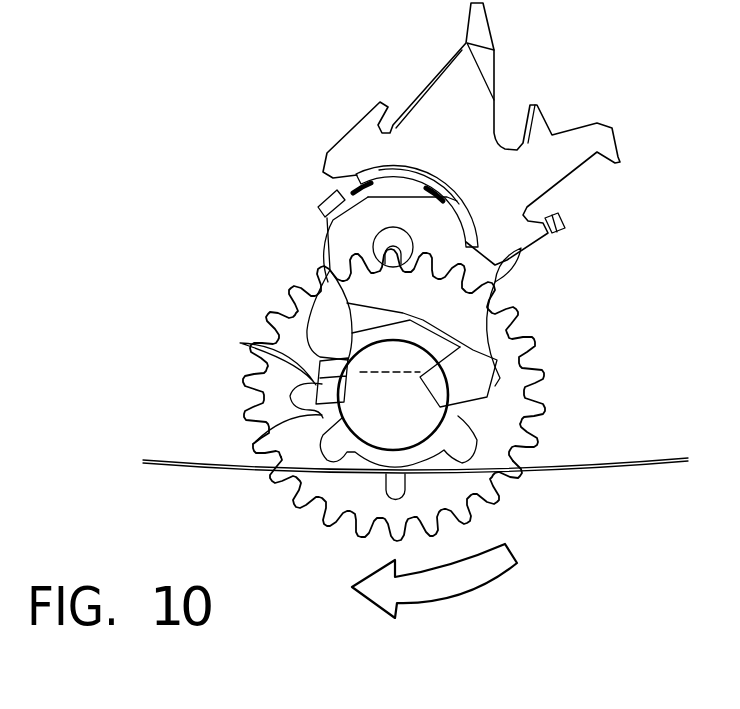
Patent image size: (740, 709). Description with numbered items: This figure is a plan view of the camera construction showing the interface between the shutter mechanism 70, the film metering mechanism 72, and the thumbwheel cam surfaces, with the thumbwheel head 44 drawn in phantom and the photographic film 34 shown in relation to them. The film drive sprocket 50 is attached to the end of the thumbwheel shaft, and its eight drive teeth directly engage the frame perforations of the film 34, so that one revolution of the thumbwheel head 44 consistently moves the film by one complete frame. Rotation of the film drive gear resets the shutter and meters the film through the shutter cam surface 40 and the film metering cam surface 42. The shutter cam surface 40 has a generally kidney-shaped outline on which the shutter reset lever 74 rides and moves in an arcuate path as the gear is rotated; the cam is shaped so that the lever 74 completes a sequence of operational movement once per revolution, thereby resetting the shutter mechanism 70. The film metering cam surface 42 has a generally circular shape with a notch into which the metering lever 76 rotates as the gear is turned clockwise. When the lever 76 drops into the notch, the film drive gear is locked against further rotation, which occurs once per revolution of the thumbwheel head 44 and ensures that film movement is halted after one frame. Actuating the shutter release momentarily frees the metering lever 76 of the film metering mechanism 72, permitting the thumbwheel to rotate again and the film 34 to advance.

The photographic film 34 is at (162, 459).
The shutter cam surface 40 is at (250, 343).
The film metering cam surface 42 is at (431, 375).
The thumbwheel head 44 is at (302, 518).
The film drive sprocket 50 is at (253, 444).
The shutter mechanism 70 is at (262, 173).
The film metering mechanism 72 is at (608, 225).
The shutter reset lever 74 is at (293, 298).
The metering lever 76 is at (497, 363).